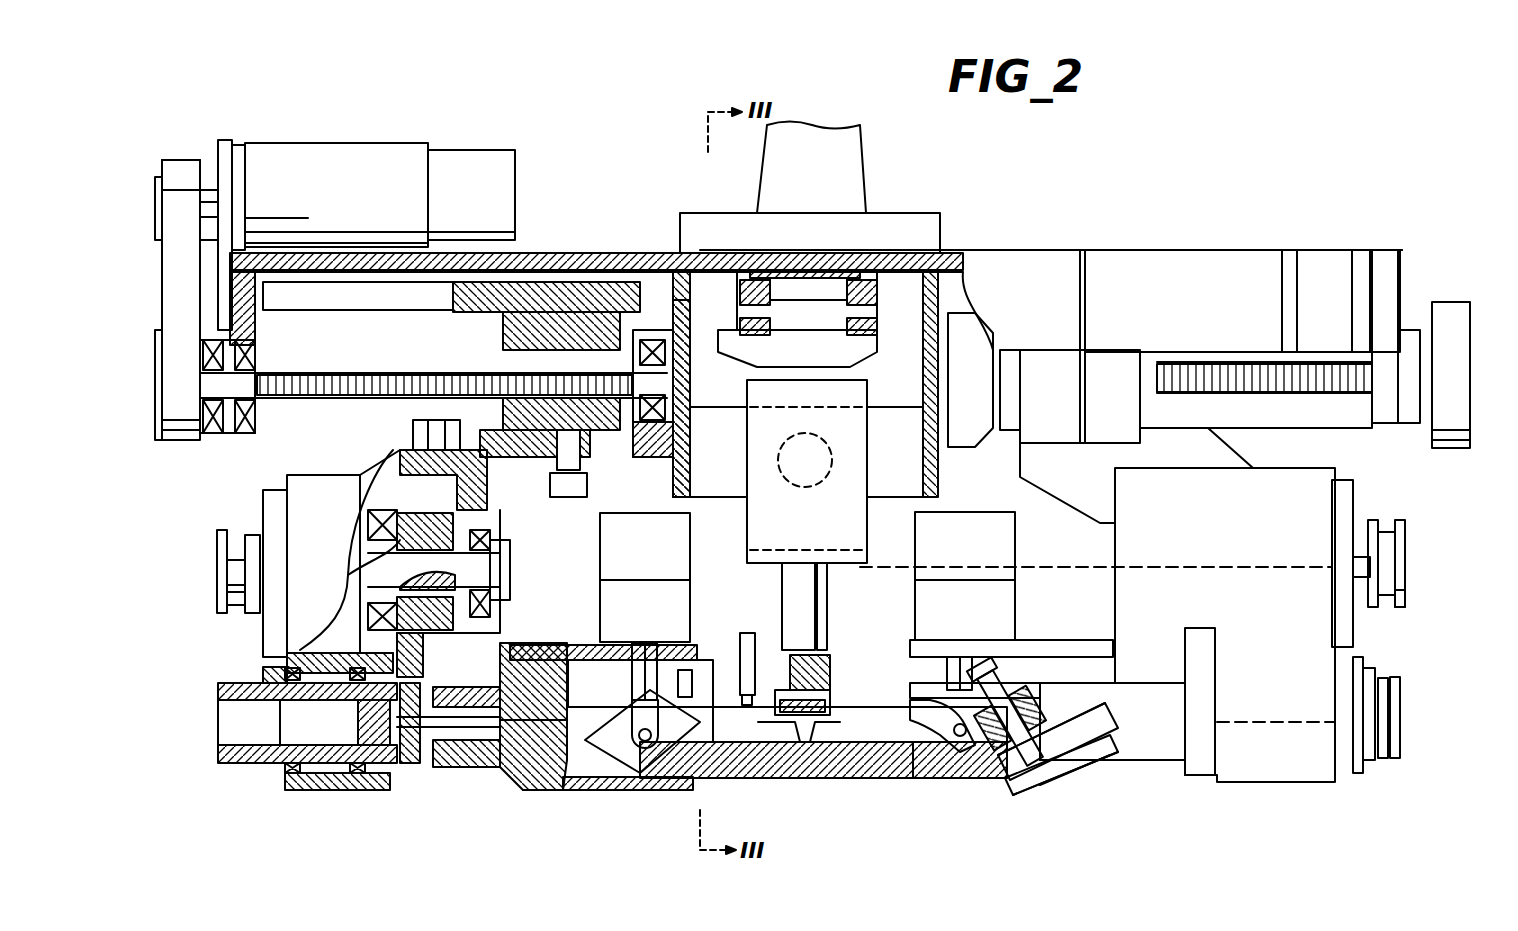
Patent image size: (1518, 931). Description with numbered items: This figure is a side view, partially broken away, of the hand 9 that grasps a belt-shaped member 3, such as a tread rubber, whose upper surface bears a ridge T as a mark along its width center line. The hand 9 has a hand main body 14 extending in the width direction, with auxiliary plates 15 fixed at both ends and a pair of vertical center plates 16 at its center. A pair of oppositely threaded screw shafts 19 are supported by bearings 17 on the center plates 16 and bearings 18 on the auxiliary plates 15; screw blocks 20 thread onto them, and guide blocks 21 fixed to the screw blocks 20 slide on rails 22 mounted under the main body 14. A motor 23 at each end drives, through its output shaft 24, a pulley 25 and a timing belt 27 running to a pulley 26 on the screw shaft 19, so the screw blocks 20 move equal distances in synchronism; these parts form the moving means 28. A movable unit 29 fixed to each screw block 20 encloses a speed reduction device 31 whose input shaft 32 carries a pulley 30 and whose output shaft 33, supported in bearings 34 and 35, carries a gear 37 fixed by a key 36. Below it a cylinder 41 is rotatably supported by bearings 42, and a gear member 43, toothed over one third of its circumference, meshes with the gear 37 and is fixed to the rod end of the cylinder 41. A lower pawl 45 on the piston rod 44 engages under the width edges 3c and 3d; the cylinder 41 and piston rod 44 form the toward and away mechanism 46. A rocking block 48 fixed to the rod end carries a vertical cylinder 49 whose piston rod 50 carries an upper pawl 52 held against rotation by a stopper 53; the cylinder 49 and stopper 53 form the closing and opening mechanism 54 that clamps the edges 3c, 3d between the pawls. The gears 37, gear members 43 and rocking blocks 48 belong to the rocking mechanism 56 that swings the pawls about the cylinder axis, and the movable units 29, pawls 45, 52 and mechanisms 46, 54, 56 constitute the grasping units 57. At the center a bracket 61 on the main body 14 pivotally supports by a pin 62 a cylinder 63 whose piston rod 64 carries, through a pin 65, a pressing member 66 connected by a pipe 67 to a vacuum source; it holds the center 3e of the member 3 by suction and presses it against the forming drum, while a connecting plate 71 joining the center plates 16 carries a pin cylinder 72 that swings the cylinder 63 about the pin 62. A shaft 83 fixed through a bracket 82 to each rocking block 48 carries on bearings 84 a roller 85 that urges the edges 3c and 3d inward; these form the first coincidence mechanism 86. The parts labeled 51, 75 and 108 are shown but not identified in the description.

The belt-shaped member 3 is at (775, 779).
The width edge 3c is at (643, 791).
The width edge 3d is at (948, 779).
The center 3e is at (813, 779).
The hand 9 is at (968, 194).
The hand main body 14 is at (958, 252).
The auxiliary plates 15 is at (256, 345).
The center plates 16 is at (673, 482).
The bearings 17 is at (690, 425).
The bearings 18 is at (230, 434).
The screw shafts 19 is at (386, 373).
The screw blocks 20 is at (638, 438).
The guide blocks 21 is at (455, 309).
The rails 22 is at (343, 311).
The motors 23 is at (362, 156).
The output shafts 24 is at (222, 173).
The pulleys 25 is at (162, 192).
The pulleys 26 is at (157, 392).
The timing belt 27 is at (173, 280).
The moving means 28 is at (155, 240).
The movable unit 29 is at (402, 450).
The pulley 30 is at (215, 546).
The speed reduction device 31 is at (305, 473).
The input shaft 32 is at (252, 548).
The output shaft 33 is at (368, 546).
The bearing 34 is at (360, 600).
The bearing 35 is at (492, 536).
The key 36 is at (455, 580).
The gear 37 is at (385, 505).
The cylinder 41 is at (240, 764).
The bearings 42 is at (300, 790).
The gear member 43 is at (424, 652).
The piston rods 44 is at (470, 766).
The lower pawl 45 is at (572, 779).
The toward and away mechanisms 46 is at (345, 791).
The rocking block 48 is at (570, 643).
The vertical cylinder 49 is at (600, 536).
The piston rod 50 is at (640, 643).
The clamp lever 51 is at (632, 722).
The upper pawl 52 is at (694, 700).
The stoppers 53 is at (698, 660).
The closing and opening mechanisms 54 is at (690, 592).
The rocking mechanisms 56 is at (215, 606).
The grasping units 57 is at (497, 781).
The bracket 61 is at (760, 268).
The pin 62 is at (790, 320).
The cylinder 63 is at (868, 442).
The piston rod 64 is at (828, 606).
The pin 65 is at (822, 670).
The pressing member 66 is at (832, 698).
The pipe 67 is at (748, 633).
The connecting plate 71 is at (890, 497).
The pin cylinder 72 is at (805, 488).
The side block 75 is at (740, 490).
The bracket 82 is at (1122, 726).
The shaft 83 is at (1046, 736).
The bearings 84 is at (1042, 690).
The roller 85 is at (992, 779).
The first coincidence mechanism 86 is at (1093, 776).
The clamp device 108 is at (1137, 810).
The ridge T is at (778, 735).